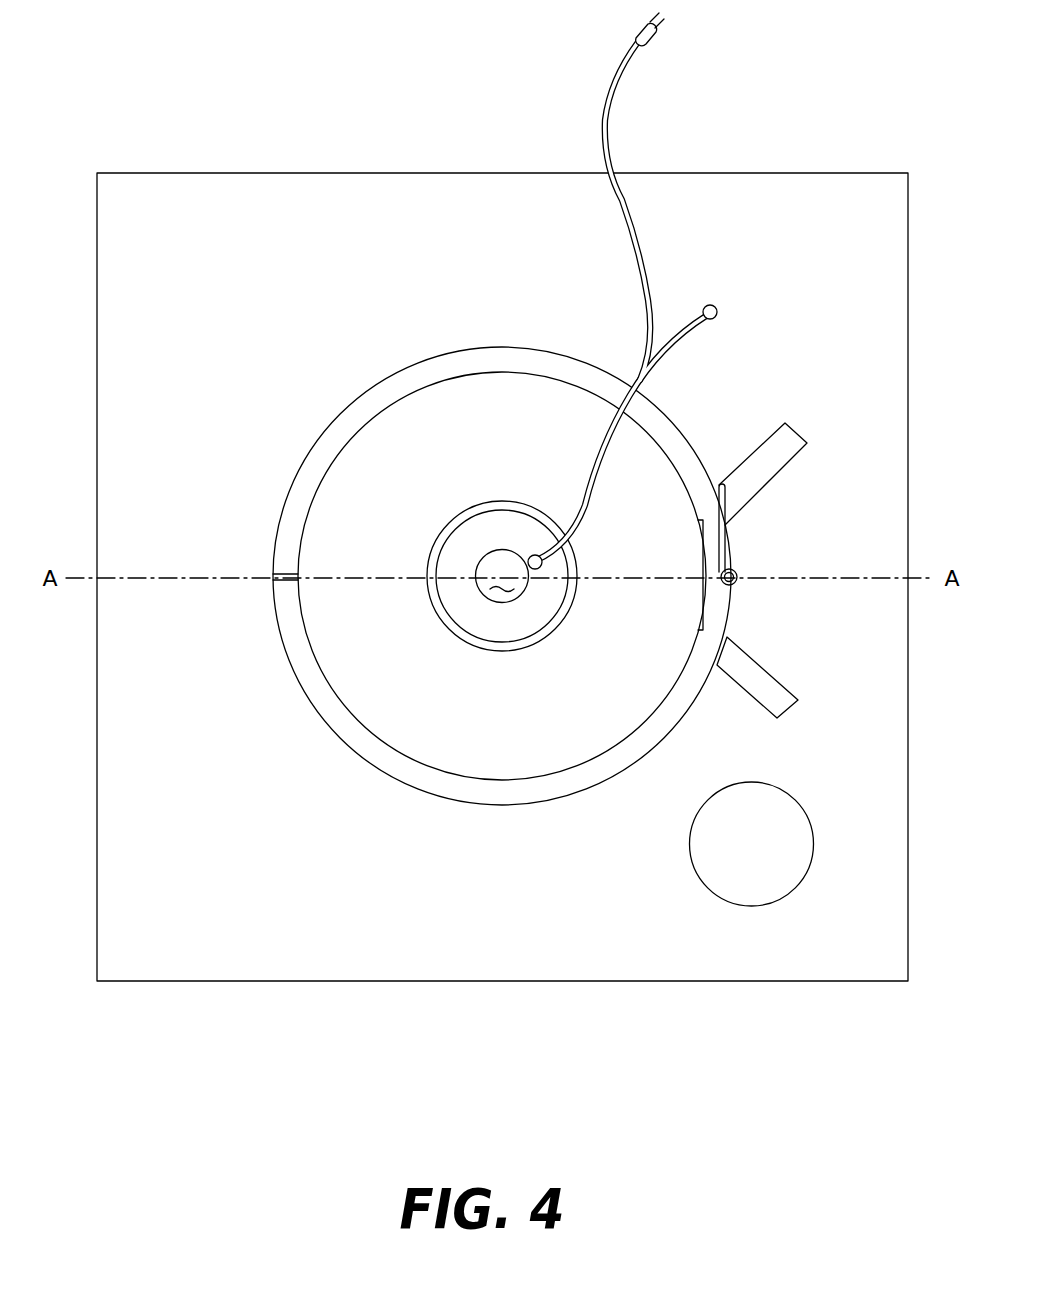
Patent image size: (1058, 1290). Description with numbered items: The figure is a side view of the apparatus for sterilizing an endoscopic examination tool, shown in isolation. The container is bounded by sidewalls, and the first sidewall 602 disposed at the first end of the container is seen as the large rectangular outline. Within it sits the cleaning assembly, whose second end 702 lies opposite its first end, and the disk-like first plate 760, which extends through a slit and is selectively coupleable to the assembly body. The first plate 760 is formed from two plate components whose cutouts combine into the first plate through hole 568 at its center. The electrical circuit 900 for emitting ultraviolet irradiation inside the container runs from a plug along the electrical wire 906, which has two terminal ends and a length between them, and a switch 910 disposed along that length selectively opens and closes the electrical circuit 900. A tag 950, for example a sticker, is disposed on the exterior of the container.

The first sidewall 602 is at (230, 257).
The first plate 760 is at (690, 433).
The second end 702 is at (385, 705).
The first plate through hole 568 is at (502, 590).
The electrical circuit 900 is at (664, 291).
The electrical wire 906 is at (680, 305).
The switch 910 is at (553, 563).
The tag 950 is at (772, 903).